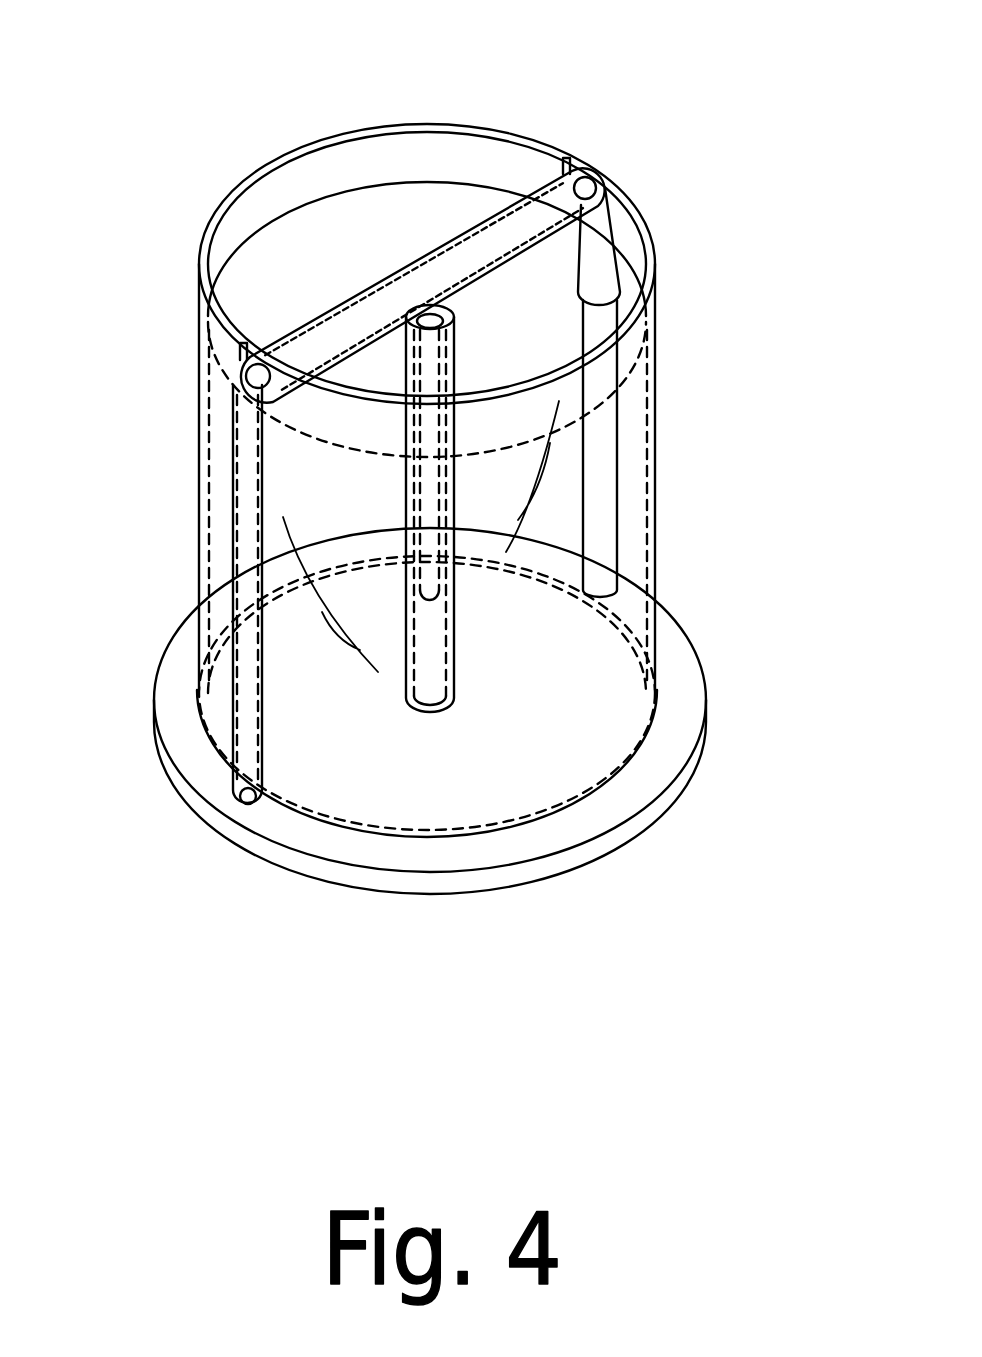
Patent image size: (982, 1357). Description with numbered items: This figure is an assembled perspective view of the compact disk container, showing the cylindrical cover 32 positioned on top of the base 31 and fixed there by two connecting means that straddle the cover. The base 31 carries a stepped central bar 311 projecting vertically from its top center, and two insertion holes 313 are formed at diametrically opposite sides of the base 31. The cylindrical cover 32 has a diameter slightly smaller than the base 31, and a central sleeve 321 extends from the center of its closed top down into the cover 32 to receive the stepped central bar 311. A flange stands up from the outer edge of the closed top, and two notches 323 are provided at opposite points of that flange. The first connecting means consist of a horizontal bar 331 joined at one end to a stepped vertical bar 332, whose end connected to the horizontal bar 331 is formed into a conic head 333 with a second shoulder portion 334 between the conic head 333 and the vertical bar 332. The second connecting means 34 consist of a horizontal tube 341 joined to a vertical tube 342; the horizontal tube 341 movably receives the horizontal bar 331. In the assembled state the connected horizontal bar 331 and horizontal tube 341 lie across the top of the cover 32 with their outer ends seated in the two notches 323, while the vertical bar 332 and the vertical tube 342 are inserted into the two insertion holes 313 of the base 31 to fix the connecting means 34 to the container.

The base 31 is at (687, 657).
The stepped central bar 311 is at (456, 670).
The insertion holes 313 is at (240, 803).
The cylindrical cover 32 is at (655, 523).
The central sleeve 321 is at (454, 632).
The notches 323 is at (237, 372).
The horizontal bar 331 is at (507, 197).
The vertical bar 332 is at (610, 388).
The conic head 333 is at (613, 232).
The second shoulder portion 334 is at (648, 290).
The second connecting means 34 is at (345, 292).
The horizontal tube 341 is at (440, 247).
The vertical tube 342 is at (233, 524).